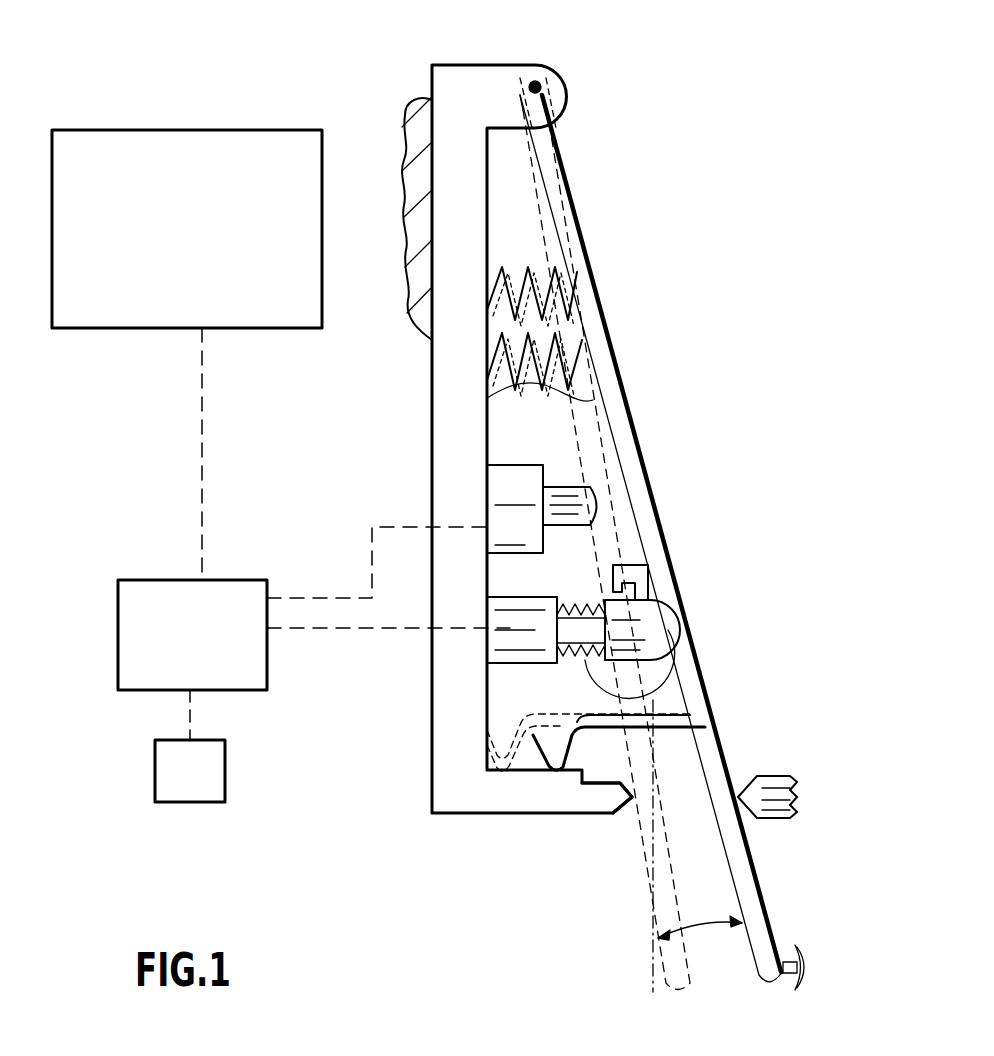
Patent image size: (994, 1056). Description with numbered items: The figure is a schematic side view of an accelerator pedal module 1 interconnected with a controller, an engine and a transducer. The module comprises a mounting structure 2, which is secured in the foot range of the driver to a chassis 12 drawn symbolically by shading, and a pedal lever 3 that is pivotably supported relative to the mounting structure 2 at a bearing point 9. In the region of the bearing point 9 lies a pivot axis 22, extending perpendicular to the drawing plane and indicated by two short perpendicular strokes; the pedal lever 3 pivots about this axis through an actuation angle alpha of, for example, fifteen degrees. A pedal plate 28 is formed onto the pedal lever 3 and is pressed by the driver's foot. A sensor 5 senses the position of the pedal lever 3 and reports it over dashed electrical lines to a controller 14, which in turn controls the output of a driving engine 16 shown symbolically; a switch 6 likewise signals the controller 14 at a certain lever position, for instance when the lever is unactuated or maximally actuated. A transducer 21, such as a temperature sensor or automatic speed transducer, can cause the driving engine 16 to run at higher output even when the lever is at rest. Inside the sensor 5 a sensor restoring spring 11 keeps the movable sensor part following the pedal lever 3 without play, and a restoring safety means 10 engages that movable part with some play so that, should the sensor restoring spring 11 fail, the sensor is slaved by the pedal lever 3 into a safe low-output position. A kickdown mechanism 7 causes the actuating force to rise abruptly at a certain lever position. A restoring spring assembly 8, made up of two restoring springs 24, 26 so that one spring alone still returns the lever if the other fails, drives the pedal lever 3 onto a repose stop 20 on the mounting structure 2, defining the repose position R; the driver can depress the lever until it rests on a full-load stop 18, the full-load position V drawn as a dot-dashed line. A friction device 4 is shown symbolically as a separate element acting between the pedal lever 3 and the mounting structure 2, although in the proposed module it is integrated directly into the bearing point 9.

The accelerator pedal module 1 is at (387, 803).
The mounting structure 2 is at (450, 703).
The pedal lever 3 is at (633, 460).
The friction device 4 is at (540, 757).
The sensor 5 is at (530, 652).
The switch 6 is at (523, 540).
The kickdown mechanism 7 is at (521, 483).
The restoring spring assembly 8 is at (568, 357).
The bearing point 9 is at (545, 85).
The restoring safety means 10 is at (645, 545).
The sensor restoring spring 11 is at (650, 680).
The chassis 12 is at (413, 143).
The controller 14 is at (236, 600).
The driving engine 16 is at (187, 178).
The full-load stop 18 is at (612, 817).
The repose stop 20 is at (757, 777).
The transducer 21 is at (212, 778).
The pivot axis 22 is at (536, 86).
The restoring spring 24 is at (537, 267).
The restoring spring 26 is at (593, 400).
The pedal plate 28 is at (803, 977).